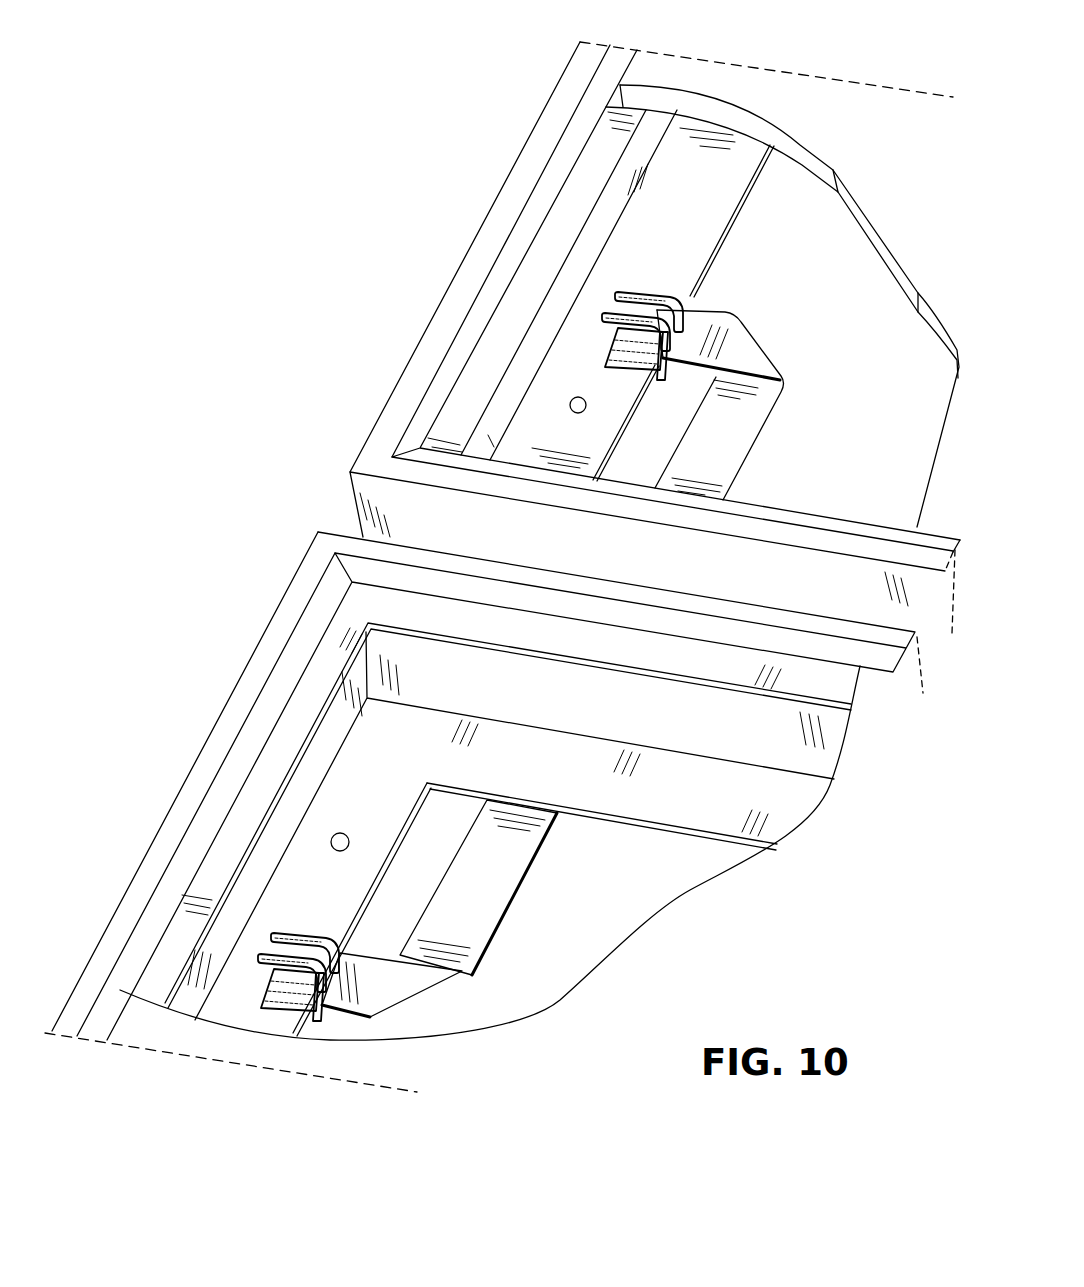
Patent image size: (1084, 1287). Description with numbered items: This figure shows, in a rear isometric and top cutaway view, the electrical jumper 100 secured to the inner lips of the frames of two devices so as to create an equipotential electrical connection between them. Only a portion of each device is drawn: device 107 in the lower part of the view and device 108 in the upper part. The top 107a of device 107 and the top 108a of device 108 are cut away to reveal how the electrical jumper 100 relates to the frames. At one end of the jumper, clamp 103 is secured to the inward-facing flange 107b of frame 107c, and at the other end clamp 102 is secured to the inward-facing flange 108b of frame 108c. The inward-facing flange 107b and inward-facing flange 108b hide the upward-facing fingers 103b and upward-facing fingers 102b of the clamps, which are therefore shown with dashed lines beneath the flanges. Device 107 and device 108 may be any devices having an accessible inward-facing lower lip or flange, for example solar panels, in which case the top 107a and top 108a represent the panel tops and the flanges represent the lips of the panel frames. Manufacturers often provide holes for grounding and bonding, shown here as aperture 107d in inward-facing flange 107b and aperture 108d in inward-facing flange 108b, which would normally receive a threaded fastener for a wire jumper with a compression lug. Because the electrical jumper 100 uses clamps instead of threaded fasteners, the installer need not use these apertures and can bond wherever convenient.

The electrical jumper 100 is at (540, 868).
The clamp 102 is at (680, 286).
The upward-facing fingers 102b is at (624, 380).
The clamp 103 is at (296, 910).
The upward-facing fingers 103b is at (280, 1017).
The device 107 is at (248, 648).
The top 107a is at (746, 935).
The inward-facing flange 107b is at (426, 753).
The frame 107c is at (215, 720).
The aperture 107d is at (341, 832).
The device 108 is at (513, 166).
The top 108a is at (880, 129).
The inward-facing flange 108b is at (706, 225).
The frame 108c is at (461, 266).
The aperture 108d is at (571, 410).